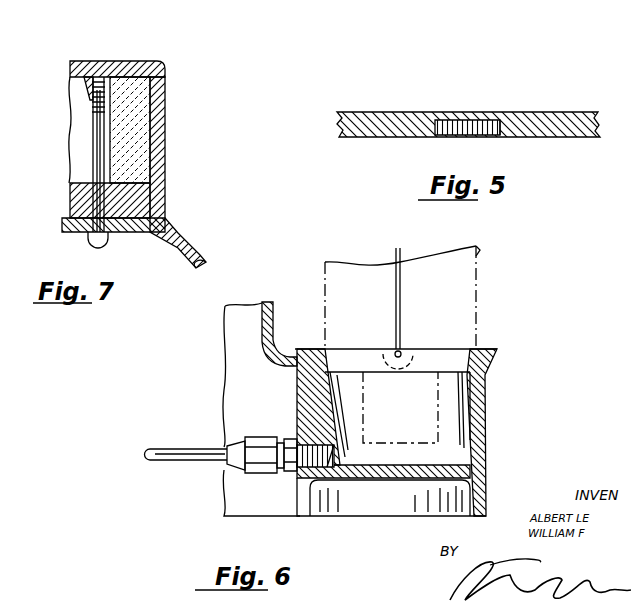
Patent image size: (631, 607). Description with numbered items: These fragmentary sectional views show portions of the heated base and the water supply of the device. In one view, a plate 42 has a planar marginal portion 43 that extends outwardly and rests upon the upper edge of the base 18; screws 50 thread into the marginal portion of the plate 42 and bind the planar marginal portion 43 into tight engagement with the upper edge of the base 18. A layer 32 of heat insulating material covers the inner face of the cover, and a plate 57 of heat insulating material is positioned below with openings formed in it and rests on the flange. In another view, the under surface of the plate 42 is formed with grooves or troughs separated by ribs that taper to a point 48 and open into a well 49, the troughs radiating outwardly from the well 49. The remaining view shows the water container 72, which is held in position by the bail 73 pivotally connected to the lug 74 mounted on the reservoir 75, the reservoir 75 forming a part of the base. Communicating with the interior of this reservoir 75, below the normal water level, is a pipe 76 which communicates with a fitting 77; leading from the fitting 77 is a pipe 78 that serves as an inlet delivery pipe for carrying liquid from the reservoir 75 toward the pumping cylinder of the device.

In FIG. 7, the base 18 is at (165, 134).
In FIG. 6, the base 18 is at (274, 317).
In FIG. 7, the layer of heat insulating material 32 is at (150, 97).
In FIG. 5, the plate 42 is at (520, 118).
In FIG. 7, the planar marginal portion 43 is at (134, 64).
In FIG. 5, the point 48 is at (506, 132).
In FIG. 5, the well 49 is at (470, 130).
In FIG. 7, the screws 50 is at (100, 170).
In FIG. 7, the plate of heat insulating material 57 is at (75, 212).
In FIG. 6, the water container 72 is at (480, 258).
In FIG. 6, the bail 73 is at (399, 262).
In FIG. 6, the lug 74 is at (414, 352).
In FIG. 6, the reservoir 75 is at (486, 416).
In FIG. 6, the pipe 76 is at (325, 447).
In FIG. 6, the fitting 77 is at (252, 436).
In FIG. 6, the pipe 78 is at (152, 433).